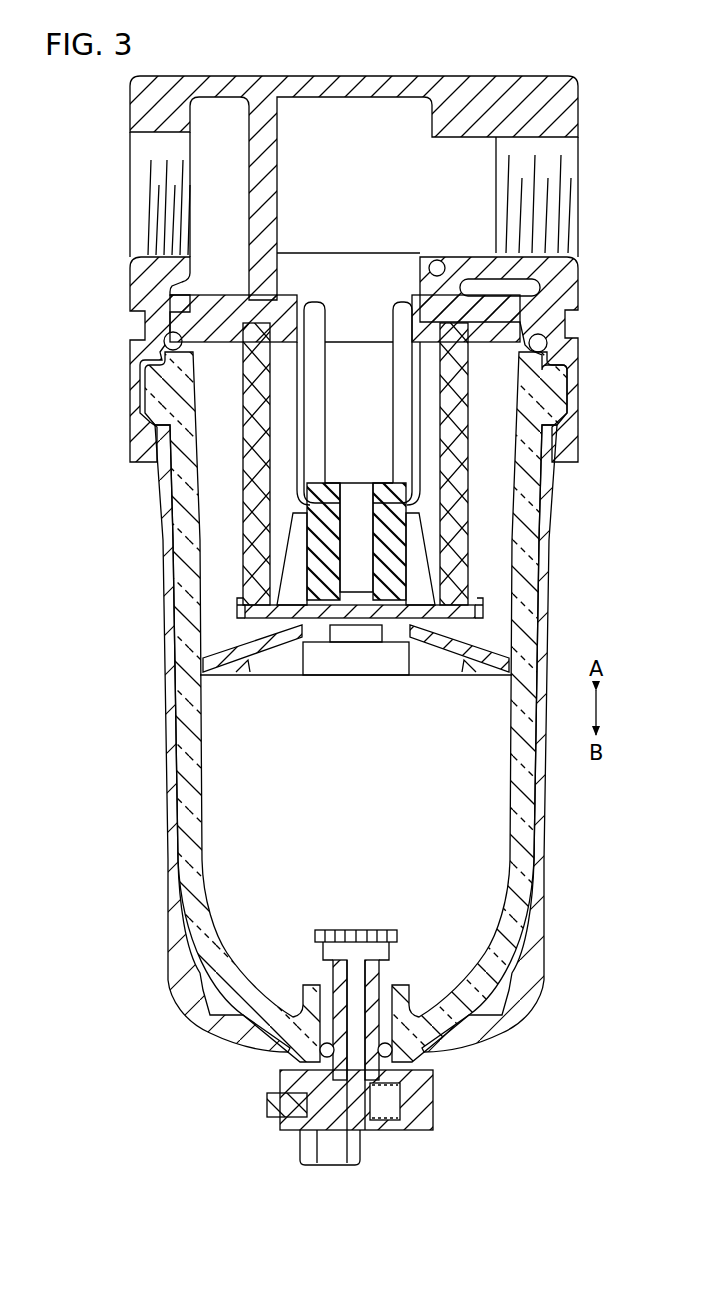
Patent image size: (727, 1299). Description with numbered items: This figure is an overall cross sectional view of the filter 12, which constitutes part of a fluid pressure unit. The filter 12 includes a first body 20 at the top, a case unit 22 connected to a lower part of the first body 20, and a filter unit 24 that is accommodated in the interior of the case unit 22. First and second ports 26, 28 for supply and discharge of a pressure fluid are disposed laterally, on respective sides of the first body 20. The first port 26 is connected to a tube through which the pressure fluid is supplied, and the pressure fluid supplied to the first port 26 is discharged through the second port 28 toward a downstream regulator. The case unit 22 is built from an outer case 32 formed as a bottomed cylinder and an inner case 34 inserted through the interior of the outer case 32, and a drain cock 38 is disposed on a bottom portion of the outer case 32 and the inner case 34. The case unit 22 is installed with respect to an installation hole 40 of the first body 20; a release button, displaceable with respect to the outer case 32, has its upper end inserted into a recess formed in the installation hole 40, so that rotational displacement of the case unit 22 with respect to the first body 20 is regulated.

The filter 12 is at (596, 66).
The first body 20 is at (124, 93).
The case unit 22 is at (164, 1047).
The filter unit 24 is at (480, 555).
The first port 26 is at (147, 185).
The second port 28 is at (574, 165).
The outer case 32 is at (170, 748).
The inner case 34 is at (185, 700).
The drain cock 38 is at (385, 1133).
The installation hole 40 is at (152, 380).